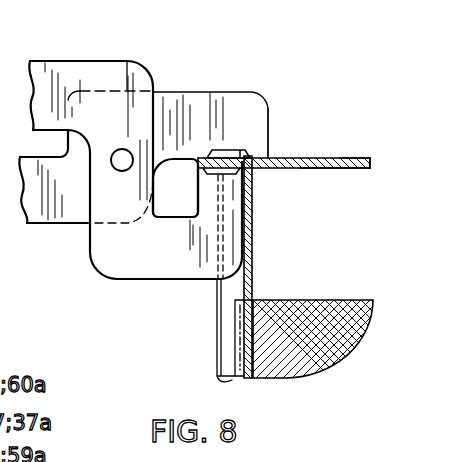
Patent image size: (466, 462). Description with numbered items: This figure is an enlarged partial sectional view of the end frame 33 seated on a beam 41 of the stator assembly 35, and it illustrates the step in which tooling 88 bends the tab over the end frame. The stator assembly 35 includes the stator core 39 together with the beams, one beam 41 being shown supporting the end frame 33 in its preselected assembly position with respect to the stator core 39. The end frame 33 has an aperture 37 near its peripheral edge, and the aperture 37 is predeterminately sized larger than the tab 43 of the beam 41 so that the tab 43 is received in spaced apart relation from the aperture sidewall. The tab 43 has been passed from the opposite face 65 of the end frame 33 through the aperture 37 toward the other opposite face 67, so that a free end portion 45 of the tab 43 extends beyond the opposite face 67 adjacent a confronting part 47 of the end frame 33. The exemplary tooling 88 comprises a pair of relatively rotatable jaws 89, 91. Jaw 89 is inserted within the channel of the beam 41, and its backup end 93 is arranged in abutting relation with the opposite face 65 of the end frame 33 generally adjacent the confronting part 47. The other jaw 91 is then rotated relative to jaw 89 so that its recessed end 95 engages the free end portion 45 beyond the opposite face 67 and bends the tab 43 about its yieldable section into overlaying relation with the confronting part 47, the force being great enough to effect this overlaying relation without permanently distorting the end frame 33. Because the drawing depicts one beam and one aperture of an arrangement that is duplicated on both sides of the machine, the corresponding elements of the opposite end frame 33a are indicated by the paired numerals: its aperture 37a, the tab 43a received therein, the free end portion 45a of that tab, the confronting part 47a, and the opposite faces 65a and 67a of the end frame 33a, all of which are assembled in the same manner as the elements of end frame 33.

The end frame 33 is at (313, 138).
The end frame 33a is at (313, 138).
The stator assembly 35 is at (346, 320).
The aperture 37 is at (287, 267).
The aperture 37a is at (254, 168).
The stator core 39 is at (347, 323).
The beam 41 is at (230, 378).
The tab 43 is at (284, 144).
The tab 43a is at (242, 157).
The free end portion 45 is at (273, 117).
The free end portion 45a is at (228, 151).
The confronting part 47 is at (247, 100).
The confronting part 47a is at (207, 151).
The opposite face 65 is at (360, 181).
The opposite face 65a is at (335, 168).
The opposite face 67 is at (384, 132).
The opposite face 67a is at (362, 158).
The tooling 88 is at (105, 282).
The jaw 89 is at (162, 268).
The jaw 91 is at (166, 95).
The backup end 93 is at (208, 184).
The recessed end 95 is at (270, 113).